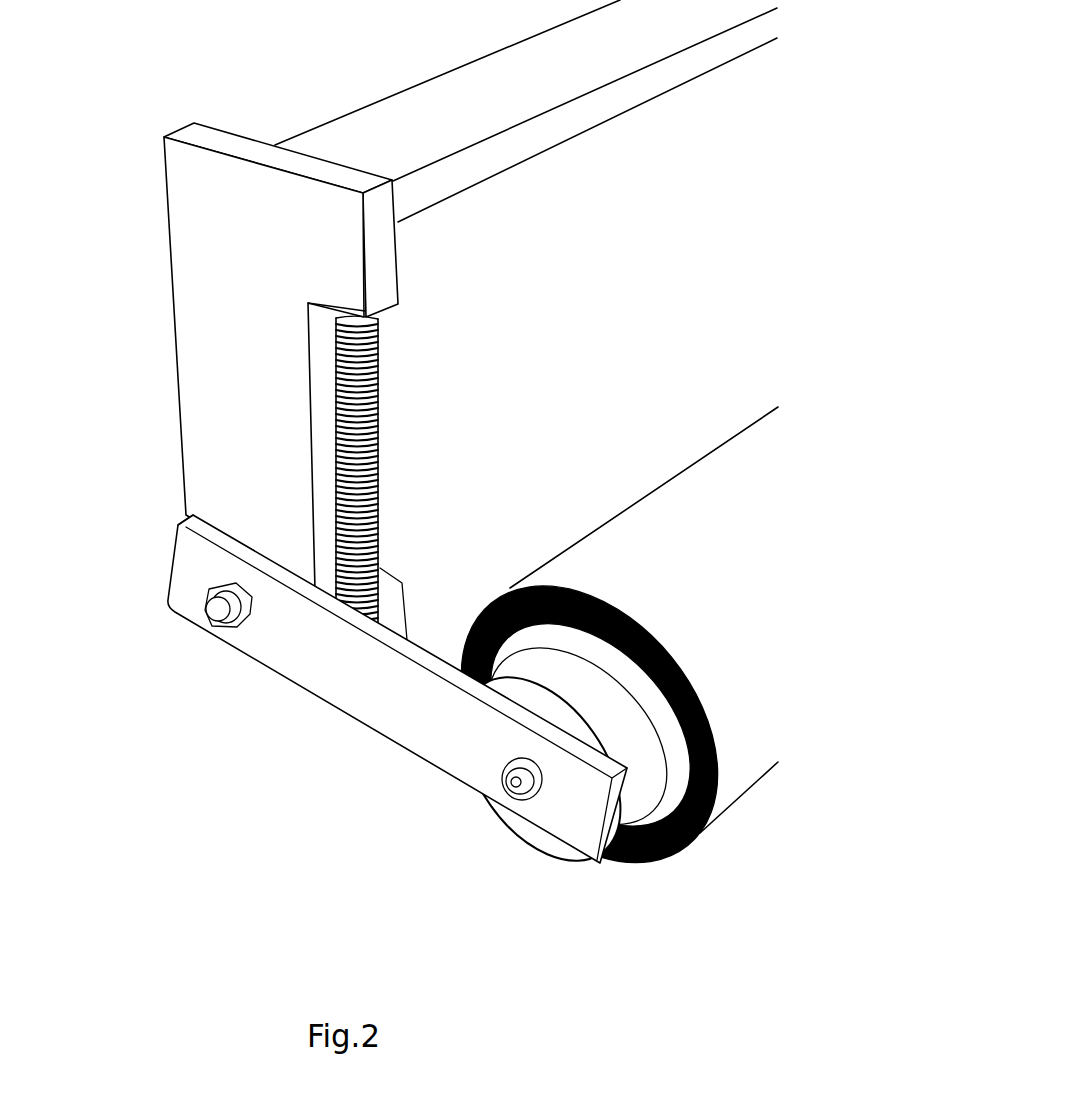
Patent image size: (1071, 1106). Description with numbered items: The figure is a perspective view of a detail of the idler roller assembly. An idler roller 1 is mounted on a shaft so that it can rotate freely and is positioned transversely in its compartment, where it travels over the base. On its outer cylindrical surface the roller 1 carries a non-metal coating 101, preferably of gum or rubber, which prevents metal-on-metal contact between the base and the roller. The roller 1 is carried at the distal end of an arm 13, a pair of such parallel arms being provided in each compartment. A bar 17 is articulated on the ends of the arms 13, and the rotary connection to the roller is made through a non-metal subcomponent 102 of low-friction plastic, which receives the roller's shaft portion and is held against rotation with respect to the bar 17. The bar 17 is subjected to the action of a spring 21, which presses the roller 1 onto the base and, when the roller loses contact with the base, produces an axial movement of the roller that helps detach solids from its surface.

The arm 13 is at (193, 305).
The spring 21 is at (378, 387).
The bar 17 is at (320, 661).
The idler roller 1 is at (593, 691).
The non-metal coating 101 is at (652, 847).
The subcomponent 102 is at (568, 672).